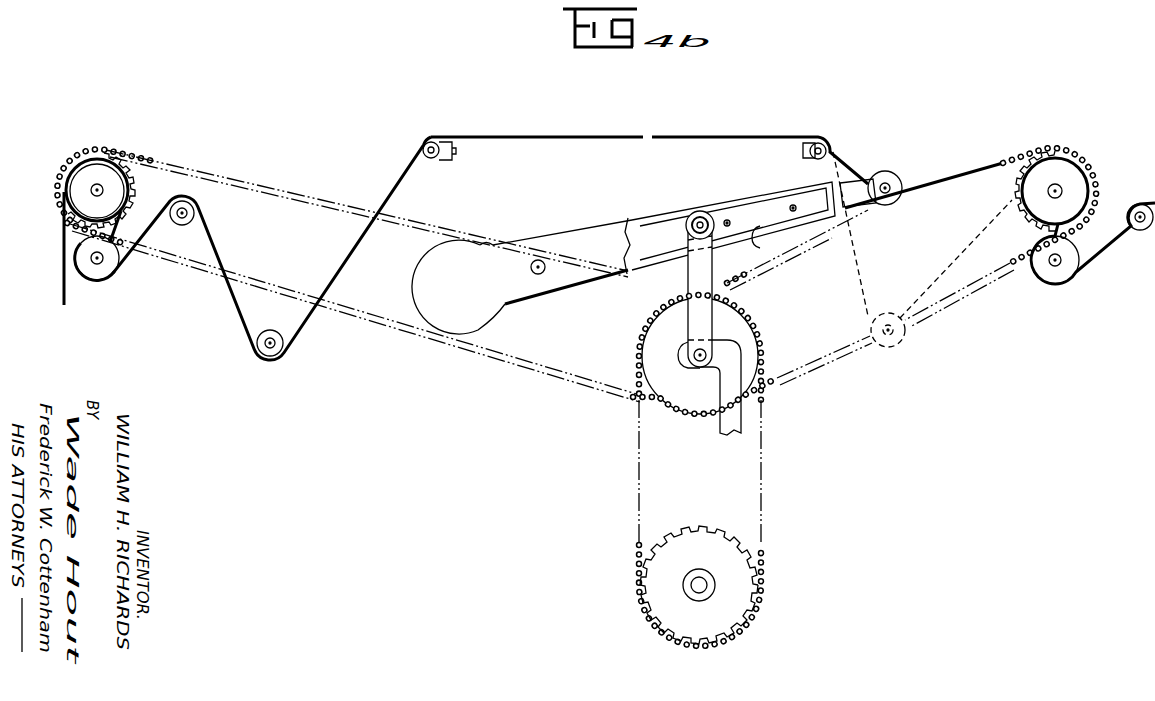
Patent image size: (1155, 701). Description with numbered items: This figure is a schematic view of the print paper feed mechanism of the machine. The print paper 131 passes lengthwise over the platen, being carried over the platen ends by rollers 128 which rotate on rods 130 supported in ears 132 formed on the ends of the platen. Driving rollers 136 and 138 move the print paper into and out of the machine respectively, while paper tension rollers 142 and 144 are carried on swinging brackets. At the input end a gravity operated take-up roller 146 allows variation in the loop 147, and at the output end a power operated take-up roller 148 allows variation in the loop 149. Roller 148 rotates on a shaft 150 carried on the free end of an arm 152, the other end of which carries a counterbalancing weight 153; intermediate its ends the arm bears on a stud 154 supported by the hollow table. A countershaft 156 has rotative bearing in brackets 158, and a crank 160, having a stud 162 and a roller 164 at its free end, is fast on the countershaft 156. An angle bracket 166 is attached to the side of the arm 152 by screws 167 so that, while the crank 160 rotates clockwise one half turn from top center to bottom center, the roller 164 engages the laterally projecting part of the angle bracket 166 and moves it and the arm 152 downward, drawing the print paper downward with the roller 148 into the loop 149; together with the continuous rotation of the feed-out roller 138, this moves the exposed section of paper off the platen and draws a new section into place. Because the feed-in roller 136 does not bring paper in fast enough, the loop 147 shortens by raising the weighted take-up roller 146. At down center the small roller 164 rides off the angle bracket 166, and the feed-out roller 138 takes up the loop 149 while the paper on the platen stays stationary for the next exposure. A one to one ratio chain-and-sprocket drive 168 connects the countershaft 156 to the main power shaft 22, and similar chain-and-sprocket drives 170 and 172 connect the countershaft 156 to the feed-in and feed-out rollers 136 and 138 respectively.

The main power shaft 22 is at (700, 586).
The rollers 128 is at (433, 136).
The rods 130 is at (440, 162).
The print paper 131 is at (66, 300).
The ears 132 is at (452, 152).
The driving roller 136 is at (78, 154).
The driving roller 138 is at (1078, 160).
The paper tension roller 142 is at (110, 274).
The paper tension roller 144 is at (1050, 277).
The gravity operated take-up roller 146 is at (270, 358).
The loop 147 is at (236, 310).
The power operated take-up roller 148 is at (882, 172).
The loop 149 is at (852, 285).
The shaft 150 is at (890, 188).
The arm 152 is at (746, 256).
The counterbalancing weight 153 is at (473, 323).
The stud 154 is at (533, 273).
The countershaft 156 is at (694, 362).
The brackets 158 is at (720, 426).
The crank 160 is at (712, 260).
The stud 162 is at (698, 212).
The roller 164 is at (688, 236).
The angle bracket 166 is at (749, 241).
The screws 167 is at (745, 191).
The chain-and-sprocket drive 168 is at (792, 453).
The chain-and-sprocket drive 170 is at (338, 342).
The chain-and-sprocket drive 172 is at (963, 336).